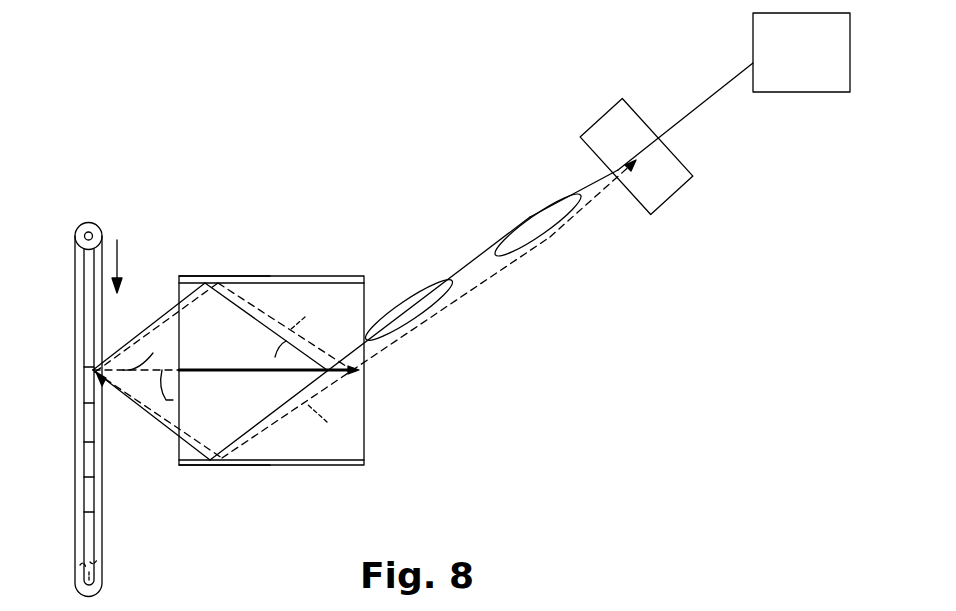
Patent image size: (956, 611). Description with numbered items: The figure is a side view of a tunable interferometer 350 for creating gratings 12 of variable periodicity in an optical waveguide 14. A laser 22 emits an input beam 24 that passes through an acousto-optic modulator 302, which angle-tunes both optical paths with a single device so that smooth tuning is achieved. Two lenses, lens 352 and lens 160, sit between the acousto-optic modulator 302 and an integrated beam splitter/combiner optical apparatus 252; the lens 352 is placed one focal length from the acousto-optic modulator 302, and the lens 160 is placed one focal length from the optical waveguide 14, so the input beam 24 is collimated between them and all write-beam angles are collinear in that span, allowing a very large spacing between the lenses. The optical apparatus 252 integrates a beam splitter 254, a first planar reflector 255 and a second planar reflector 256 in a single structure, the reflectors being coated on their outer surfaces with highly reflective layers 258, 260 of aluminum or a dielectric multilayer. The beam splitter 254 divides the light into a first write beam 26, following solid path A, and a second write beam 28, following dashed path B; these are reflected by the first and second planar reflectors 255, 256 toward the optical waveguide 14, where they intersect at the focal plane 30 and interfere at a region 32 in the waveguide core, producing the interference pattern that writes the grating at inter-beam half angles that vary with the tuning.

The gratings 12 is at (70, 362).
The optical waveguide 14 is at (75, 270).
The laser source 22 is at (797, 93).
The input beam 24 is at (700, 105).
The first write beam 26 is at (258, 310).
The second write beam 28 is at (275, 422).
The focal plane 30 is at (100, 385).
The region 32 is at (90, 367).
The lens 160 is at (398, 272).
The integrated beam splitter/combiner optical apparatus 252 is at (372, 432).
The beam splitter 254 is at (353, 374).
The first planar reflector 255 is at (243, 277).
The second planar reflector 256 is at (250, 465).
The highly reflective layer 258 is at (290, 276).
The highly reflective layer 260 is at (310, 465).
The acousto-optic modulator 302 is at (596, 121).
The tunable interferometer 350 is at (346, 160).
The lens 352 is at (520, 186).